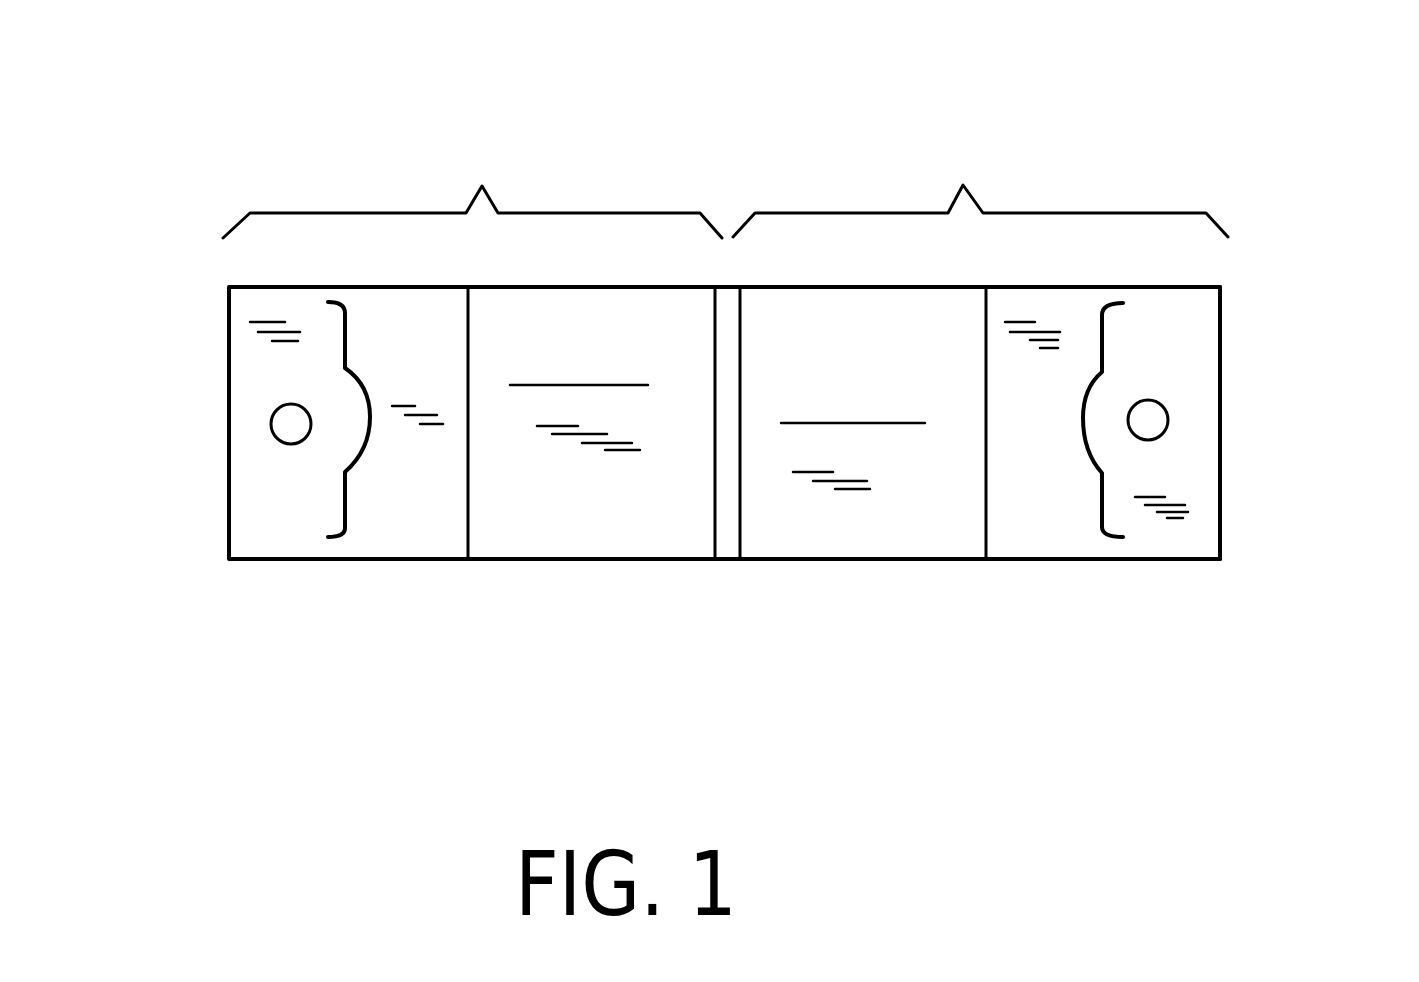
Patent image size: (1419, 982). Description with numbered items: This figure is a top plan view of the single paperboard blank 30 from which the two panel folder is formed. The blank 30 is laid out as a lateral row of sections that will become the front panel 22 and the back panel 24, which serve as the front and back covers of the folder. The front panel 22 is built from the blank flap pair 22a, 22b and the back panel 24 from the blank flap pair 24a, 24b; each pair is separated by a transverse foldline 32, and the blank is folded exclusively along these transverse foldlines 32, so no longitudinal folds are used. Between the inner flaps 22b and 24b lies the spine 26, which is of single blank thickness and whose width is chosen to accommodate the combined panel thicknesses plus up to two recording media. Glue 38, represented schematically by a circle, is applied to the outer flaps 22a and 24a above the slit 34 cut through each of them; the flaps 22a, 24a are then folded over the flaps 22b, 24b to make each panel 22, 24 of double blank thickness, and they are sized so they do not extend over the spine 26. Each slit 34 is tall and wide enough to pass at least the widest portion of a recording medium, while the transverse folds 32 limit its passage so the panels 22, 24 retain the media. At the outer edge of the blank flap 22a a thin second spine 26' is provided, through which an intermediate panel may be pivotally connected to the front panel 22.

The paperboard blank 30 is at (737, 182).
The front panel 22 is at (980, 189).
The back panel 24 is at (472, 189).
The blank flap 22a is at (1083, 533).
The blank flap 22b is at (855, 533).
The blank flap 24a is at (372, 540).
The blank flap 24b is at (557, 510).
The spine 26 is at (706, 473).
The second spine 26' is at (1314, 471).
The transverse foldline 32 is at (472, 517).
The slit 34 is at (372, 440).
The glue 38 is at (280, 430).